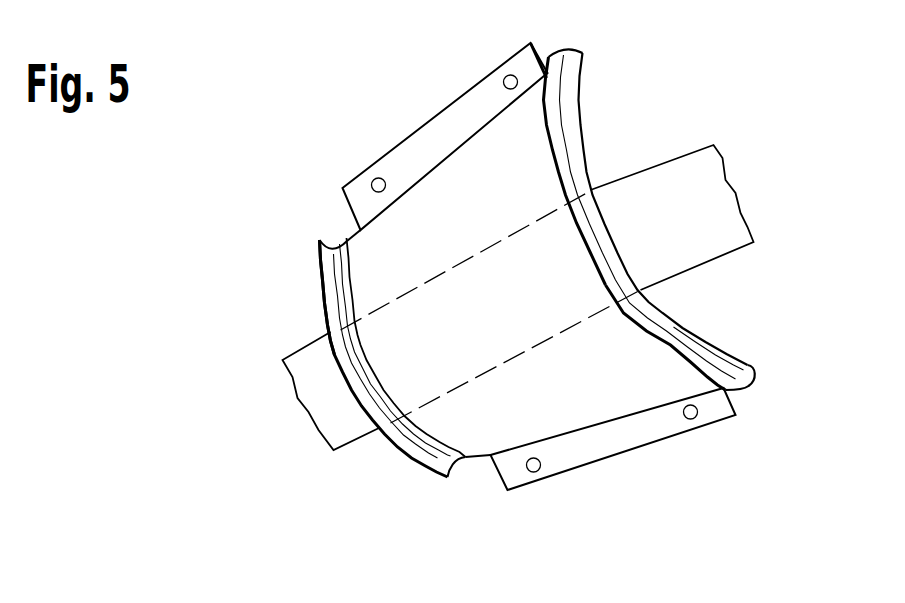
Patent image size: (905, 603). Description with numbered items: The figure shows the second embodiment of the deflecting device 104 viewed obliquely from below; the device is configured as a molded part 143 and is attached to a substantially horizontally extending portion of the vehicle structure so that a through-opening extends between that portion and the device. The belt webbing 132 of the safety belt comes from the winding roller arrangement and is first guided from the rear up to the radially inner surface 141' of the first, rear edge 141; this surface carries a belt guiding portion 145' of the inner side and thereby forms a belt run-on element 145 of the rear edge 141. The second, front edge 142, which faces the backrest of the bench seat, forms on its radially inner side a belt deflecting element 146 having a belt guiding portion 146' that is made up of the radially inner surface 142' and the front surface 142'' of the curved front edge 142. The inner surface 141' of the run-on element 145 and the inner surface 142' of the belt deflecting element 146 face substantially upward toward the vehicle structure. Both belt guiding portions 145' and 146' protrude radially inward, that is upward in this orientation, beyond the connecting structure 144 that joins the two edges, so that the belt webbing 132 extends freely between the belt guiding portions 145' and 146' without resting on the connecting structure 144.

The deflecting device 104 is at (378, 144).
The belt webbing 132 is at (686, 175).
The first, rear edge 141 is at (342, 356).
The radially inner surface of the rear edge 141' is at (402, 345).
The second, front edge 142 is at (684, 216).
The radially inner surface of the front edge 142' is at (663, 209).
The front surface of the front edge 142'' is at (616, 171).
The molded part 143 is at (484, 416).
The connecting structure 144 is at (548, 345).
The belt run-on element 145 is at (261, 297).
The belt guiding portion of the run-on element 145' is at (283, 409).
The belt deflecting element 146 is at (626, 32).
The belt guiding portion of the belt deflecting element 146' is at (690, 217).